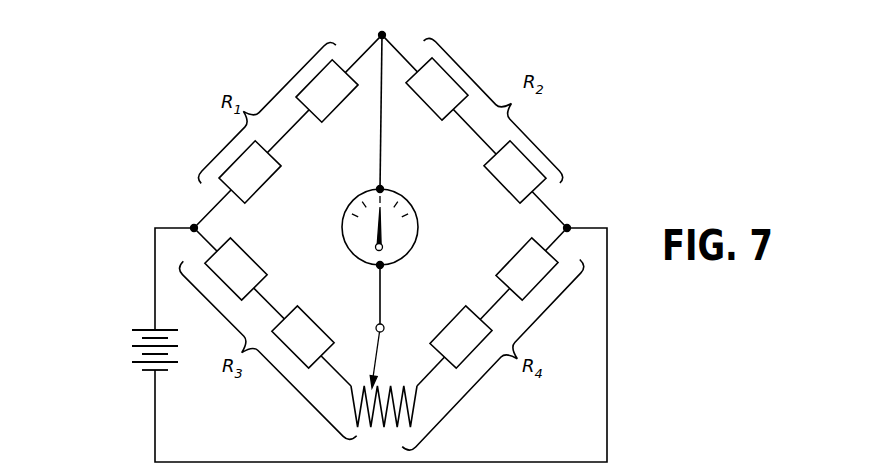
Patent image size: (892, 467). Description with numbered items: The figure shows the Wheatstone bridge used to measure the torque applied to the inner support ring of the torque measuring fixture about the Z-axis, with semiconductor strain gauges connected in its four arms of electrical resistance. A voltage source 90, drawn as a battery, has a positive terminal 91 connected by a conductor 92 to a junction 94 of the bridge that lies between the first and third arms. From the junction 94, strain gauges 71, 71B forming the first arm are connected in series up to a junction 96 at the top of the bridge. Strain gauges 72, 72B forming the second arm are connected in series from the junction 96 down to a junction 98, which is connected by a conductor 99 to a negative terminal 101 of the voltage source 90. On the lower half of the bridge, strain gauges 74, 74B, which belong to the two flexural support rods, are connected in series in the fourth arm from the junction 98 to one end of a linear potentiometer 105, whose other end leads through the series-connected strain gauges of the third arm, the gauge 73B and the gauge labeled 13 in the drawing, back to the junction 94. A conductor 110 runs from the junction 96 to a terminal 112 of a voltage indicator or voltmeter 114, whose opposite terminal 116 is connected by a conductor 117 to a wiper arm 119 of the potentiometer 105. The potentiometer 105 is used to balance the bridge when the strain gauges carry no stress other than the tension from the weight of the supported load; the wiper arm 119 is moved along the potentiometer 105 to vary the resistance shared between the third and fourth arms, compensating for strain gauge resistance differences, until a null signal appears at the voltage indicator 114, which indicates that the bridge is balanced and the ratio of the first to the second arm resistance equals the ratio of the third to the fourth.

The resistor 13 is at (303, 337).
The strain gauge 71 is at (250, 172).
The strain gauge 71B is at (327, 91).
The strain gauge 72 is at (437, 89).
The strain gauge 72B is at (515, 172).
The strain gauge 73B is at (236, 269).
The strain gauge 74 is at (527, 269).
The strain gauge 74B is at (461, 337).
The voltage source 90 is at (127, 358).
The positive terminal 91 is at (158, 329).
The conductor 92 is at (153, 275).
The junction 94 is at (194, 226).
The junction 96 is at (384, 33).
The junction 98 is at (568, 227).
The conductor 99 is at (608, 333).
The negative terminal 101 is at (158, 372).
The linear potentiometer 105 is at (388, 386).
The conductor 110 is at (380, 133).
The terminal 112 is at (381, 187).
The voltage indicator 114 is at (384, 240).
The terminal 116 is at (378, 266).
The conductor 117 is at (382, 307).
The wiper arm 119 is at (374, 352).